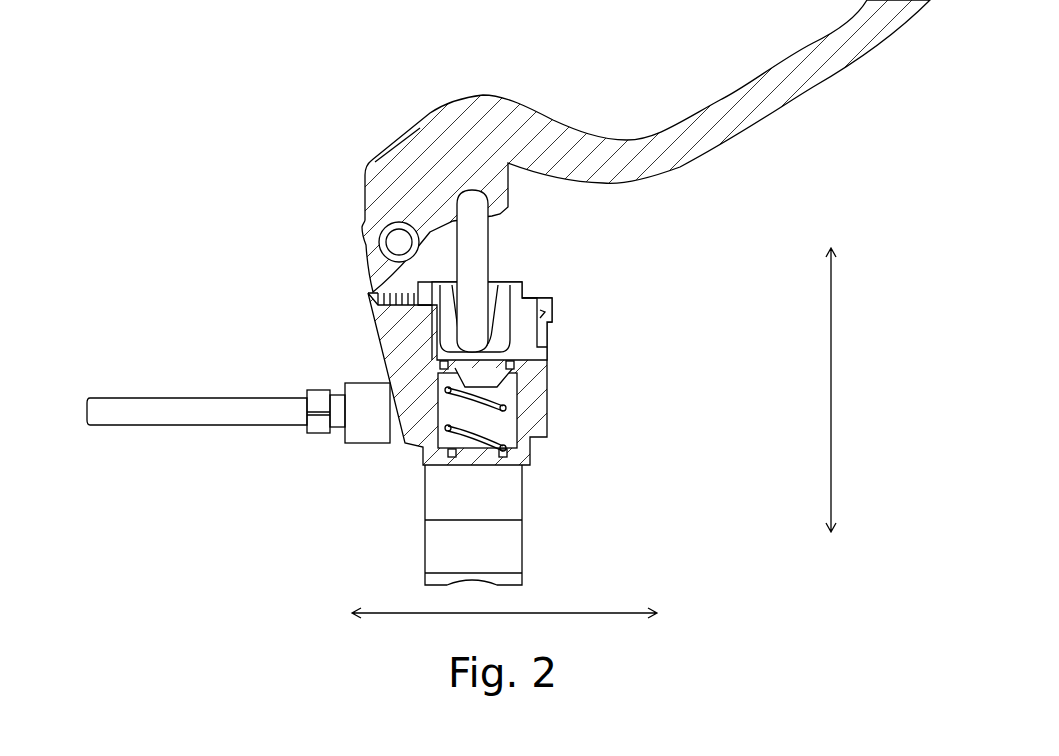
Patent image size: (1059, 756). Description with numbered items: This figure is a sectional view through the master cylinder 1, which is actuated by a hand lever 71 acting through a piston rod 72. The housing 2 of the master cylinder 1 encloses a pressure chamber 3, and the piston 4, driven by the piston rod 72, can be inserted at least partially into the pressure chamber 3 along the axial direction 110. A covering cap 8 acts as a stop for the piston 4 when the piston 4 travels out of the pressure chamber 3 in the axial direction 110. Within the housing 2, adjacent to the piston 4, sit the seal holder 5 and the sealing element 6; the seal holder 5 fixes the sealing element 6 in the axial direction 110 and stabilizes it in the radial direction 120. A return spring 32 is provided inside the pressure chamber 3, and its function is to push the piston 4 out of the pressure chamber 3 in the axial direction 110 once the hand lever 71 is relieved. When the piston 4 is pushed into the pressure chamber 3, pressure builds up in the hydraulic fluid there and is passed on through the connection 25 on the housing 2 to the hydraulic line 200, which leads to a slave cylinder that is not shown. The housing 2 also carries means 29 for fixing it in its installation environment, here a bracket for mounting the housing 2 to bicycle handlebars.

The master cylinder 1 is at (292, 217).
The housing 2 is at (372, 330).
The pressure chamber 3 is at (520, 408).
The piston 4 is at (510, 272).
The seal holder 5 is at (522, 328).
The sealing element 6 is at (537, 347).
The covering cap 8 is at (523, 288).
The connection 25 is at (360, 443).
The means for fixing the housing 29 is at (545, 560).
The return spring 32 is at (515, 397).
The hand lever 71 is at (428, 117).
The piston rod 72 is at (492, 255).
The axial direction 110 is at (831, 385).
The radial direction 120 is at (380, 612).
The hydraulic line 200 is at (145, 398).